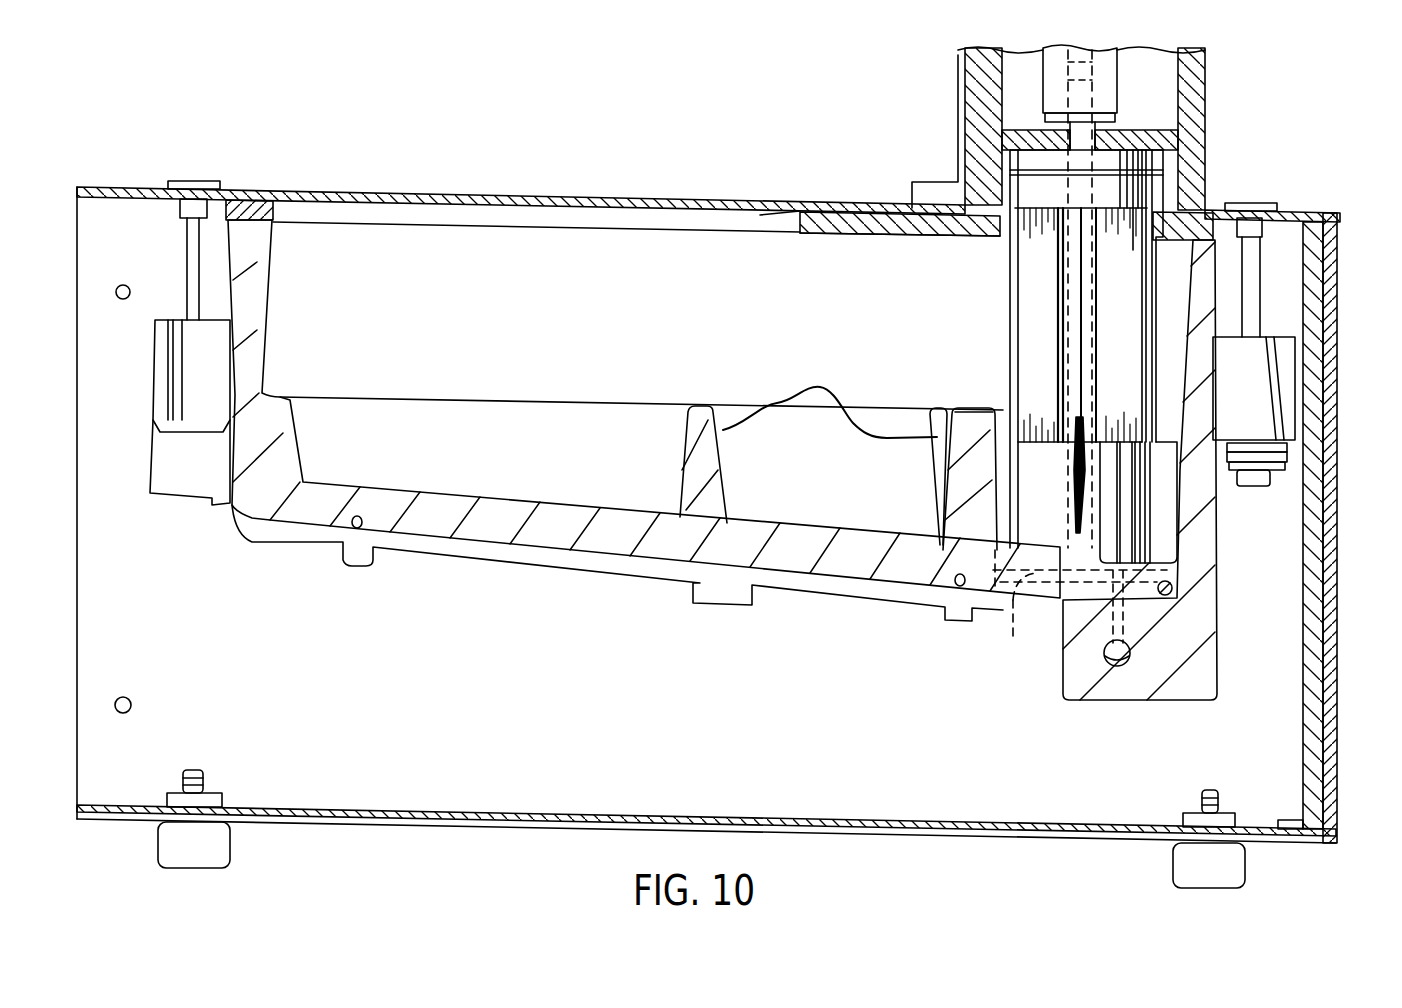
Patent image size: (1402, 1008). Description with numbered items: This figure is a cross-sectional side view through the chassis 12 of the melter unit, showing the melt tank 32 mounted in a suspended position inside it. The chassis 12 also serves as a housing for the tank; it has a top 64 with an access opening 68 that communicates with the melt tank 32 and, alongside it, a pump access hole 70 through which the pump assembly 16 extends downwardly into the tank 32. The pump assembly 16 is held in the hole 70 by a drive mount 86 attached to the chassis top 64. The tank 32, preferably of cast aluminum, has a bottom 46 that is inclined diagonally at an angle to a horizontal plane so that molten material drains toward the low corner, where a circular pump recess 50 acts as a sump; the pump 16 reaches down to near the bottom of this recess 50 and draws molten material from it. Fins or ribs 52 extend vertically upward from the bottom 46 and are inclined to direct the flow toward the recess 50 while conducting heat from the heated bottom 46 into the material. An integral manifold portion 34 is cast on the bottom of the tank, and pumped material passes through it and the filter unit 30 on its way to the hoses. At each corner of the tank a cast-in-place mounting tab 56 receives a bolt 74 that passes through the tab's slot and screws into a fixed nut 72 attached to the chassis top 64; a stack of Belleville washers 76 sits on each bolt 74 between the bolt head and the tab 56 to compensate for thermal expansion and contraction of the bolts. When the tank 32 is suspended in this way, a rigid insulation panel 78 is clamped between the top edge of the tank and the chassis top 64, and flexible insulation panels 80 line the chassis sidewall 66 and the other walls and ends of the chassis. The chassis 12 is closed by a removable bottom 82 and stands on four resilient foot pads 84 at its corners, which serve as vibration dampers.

The chassis 12 is at (145, 184).
The pump assembly 16 is at (1010, 330).
The filter unit 30 is at (1117, 667).
The melt tank 32 is at (400, 243).
The manifold portion 34 is at (1197, 667).
The bottom 46 is at (552, 507).
The pump recess 50 is at (1015, 637).
The fins 52 is at (805, 430).
The mounting tab 56 is at (1310, 378).
The top 64 is at (875, 207).
The side wall 66 is at (1337, 580).
The access opening 68 is at (800, 207).
The pump access hole 70 is at (1165, 178).
The fixed nut 72 is at (215, 186).
The bolt 74 is at (183, 263).
The Belleville washers 76 is at (1287, 455).
The rigid insulation panel 78 is at (907, 235).
The flexible insulation panels 80 is at (1340, 652).
The removable bottom 82 is at (722, 818).
The resilient foot pads 84 is at (230, 843).
The drive mount 86 is at (968, 160).